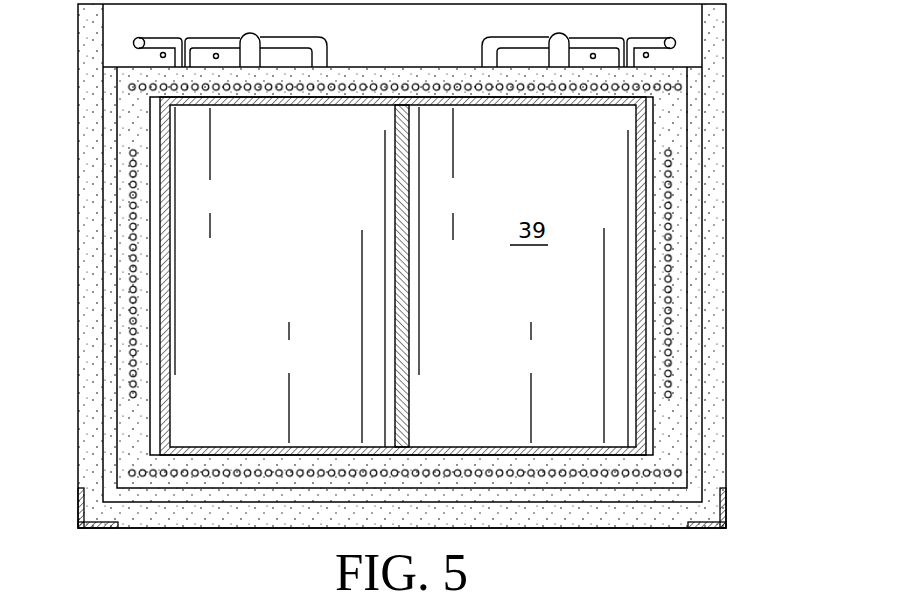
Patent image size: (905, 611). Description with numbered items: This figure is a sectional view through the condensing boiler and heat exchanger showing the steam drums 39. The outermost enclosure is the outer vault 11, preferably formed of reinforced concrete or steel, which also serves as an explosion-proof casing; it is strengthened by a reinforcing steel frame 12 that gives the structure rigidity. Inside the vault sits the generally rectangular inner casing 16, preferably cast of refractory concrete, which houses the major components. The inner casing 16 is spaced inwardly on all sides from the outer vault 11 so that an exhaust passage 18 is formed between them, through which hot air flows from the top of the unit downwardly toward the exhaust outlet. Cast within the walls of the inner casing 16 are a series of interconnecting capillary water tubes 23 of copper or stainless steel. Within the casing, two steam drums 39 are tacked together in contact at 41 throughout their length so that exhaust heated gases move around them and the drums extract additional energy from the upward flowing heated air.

The outer vault 11 is at (713, 333).
The reinforcing steel frame 12 is at (730, 507).
The inner casing 16 is at (670, 128).
The exhaust passage 18 is at (695, 265).
The capillary water tubes 23 is at (687, 197).
The steam drums 39 is at (308, 245).
The contact between drums 41 is at (396, 148).